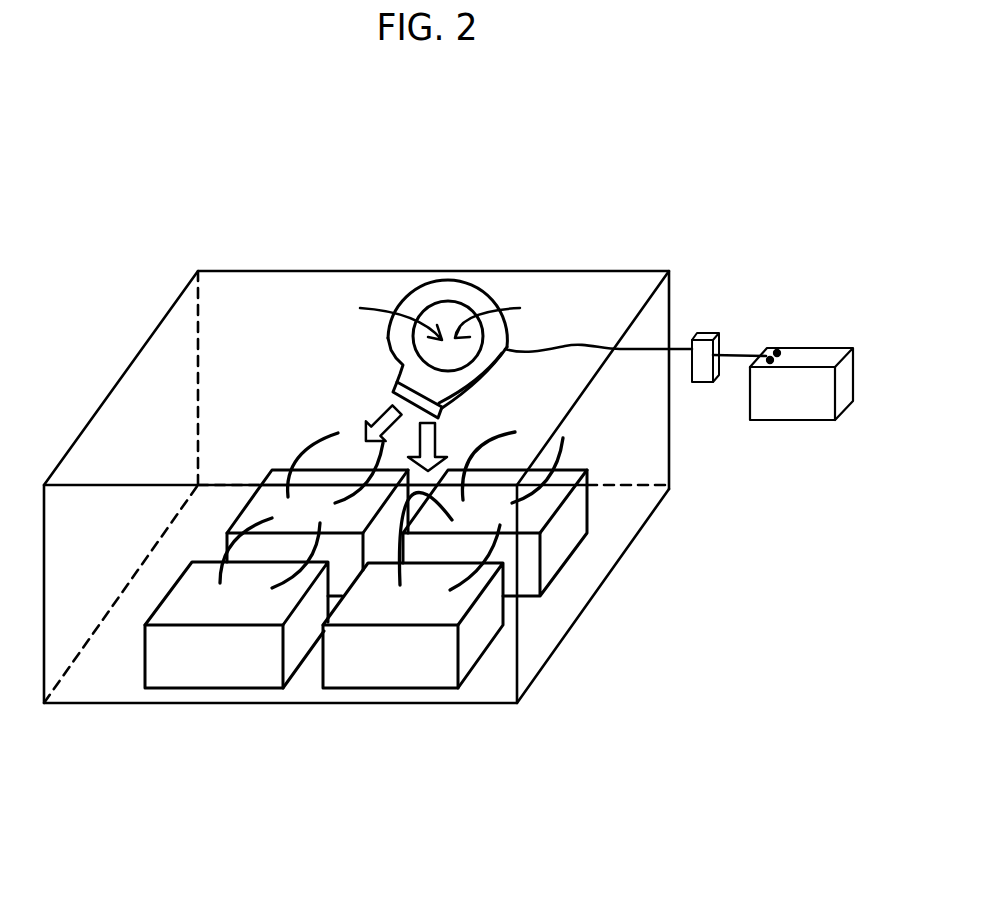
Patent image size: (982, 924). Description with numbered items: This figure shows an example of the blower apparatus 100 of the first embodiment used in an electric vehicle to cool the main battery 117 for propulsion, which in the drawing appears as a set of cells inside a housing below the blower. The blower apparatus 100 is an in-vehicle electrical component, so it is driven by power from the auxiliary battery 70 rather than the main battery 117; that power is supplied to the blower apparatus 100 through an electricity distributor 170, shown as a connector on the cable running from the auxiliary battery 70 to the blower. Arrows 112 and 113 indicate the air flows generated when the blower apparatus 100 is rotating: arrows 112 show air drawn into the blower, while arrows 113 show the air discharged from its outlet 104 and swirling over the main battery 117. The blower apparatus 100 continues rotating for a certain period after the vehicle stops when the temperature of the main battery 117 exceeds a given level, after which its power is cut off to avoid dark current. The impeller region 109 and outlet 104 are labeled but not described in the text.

The blower apparatus 100 is at (421, 286).
The air outlet 104 is at (402, 383).
The fan impeller 109 is at (450, 312).
The arrow 112 is at (522, 305).
The arrow 113 is at (372, 427).
The main battery 117 is at (247, 668).
The electricity distributor 170 is at (714, 332).
The auxiliary battery 70 is at (793, 412).